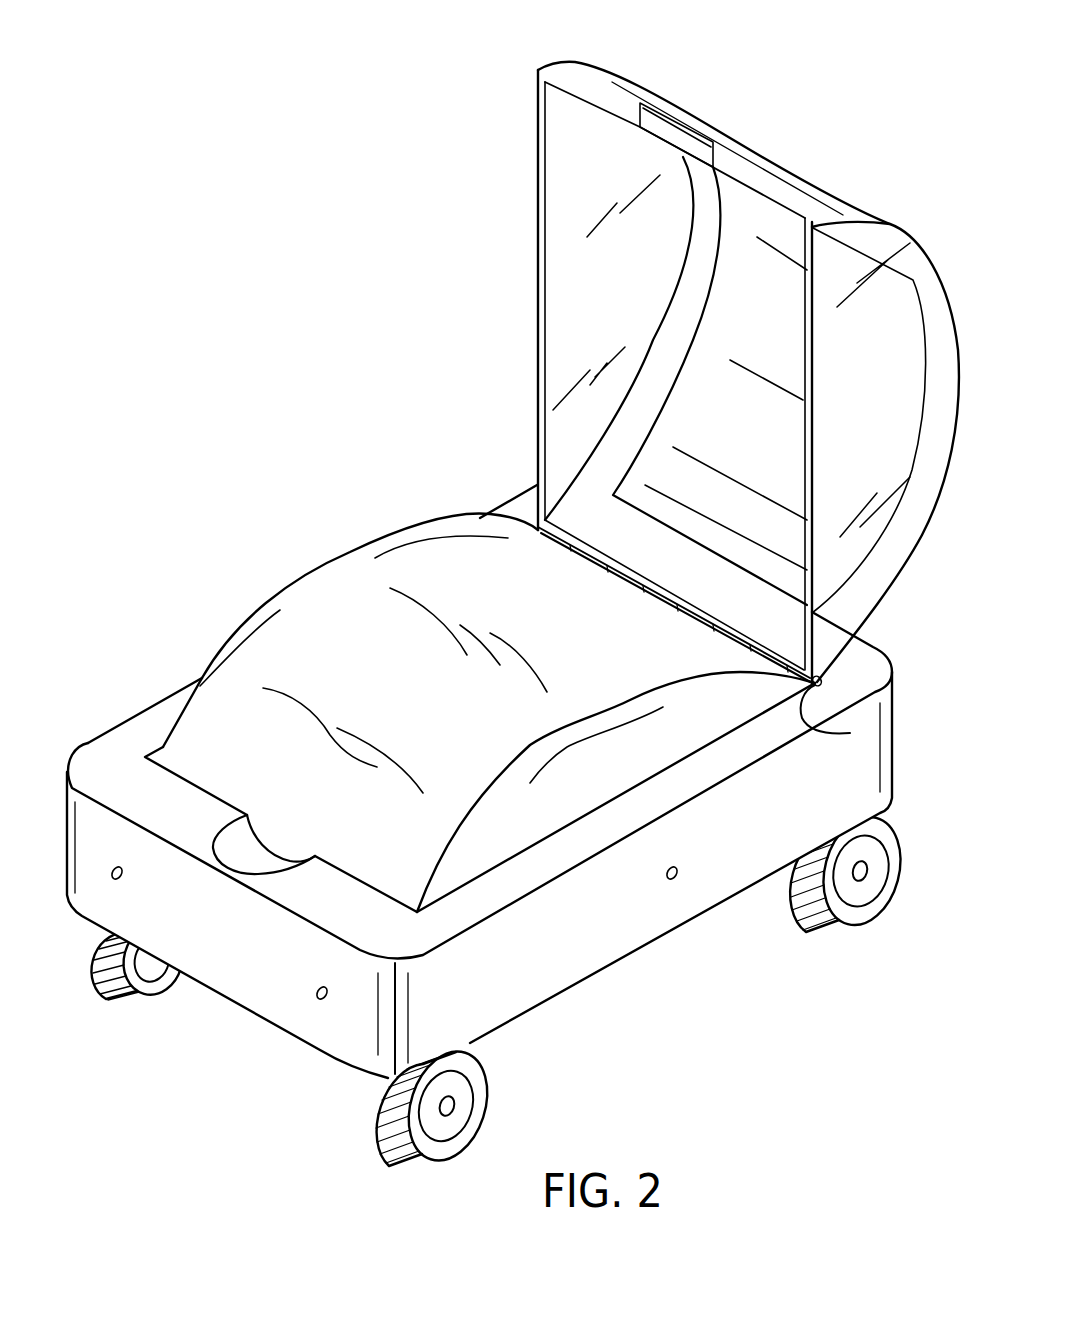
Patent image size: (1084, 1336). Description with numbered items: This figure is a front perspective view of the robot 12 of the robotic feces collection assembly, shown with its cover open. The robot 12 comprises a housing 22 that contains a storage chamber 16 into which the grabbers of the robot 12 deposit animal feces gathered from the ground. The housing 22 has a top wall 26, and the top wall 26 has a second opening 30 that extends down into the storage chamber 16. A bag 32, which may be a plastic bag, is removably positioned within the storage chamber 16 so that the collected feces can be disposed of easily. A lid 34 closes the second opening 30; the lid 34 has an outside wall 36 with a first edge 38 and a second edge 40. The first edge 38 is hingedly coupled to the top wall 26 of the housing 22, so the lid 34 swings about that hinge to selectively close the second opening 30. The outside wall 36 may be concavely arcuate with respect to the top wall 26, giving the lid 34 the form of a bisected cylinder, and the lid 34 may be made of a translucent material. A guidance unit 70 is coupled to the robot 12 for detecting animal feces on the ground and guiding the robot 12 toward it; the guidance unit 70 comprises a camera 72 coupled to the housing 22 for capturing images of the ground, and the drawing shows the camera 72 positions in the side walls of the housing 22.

The robot 12 is at (136, 601).
The storage chamber 16 is at (258, 802).
The housing 22 is at (70, 807).
The top wall 26 is at (107, 757).
The second opening 30 is at (147, 755).
The bag 32 is at (347, 588).
The lid 34 is at (818, 188).
The outside wall 36 is at (737, 167).
The first edge 38 is at (850, 733).
The second edge 40 is at (592, 107).
The guidance unit 70 is at (133, 884).
The camera 72 is at (115, 879).